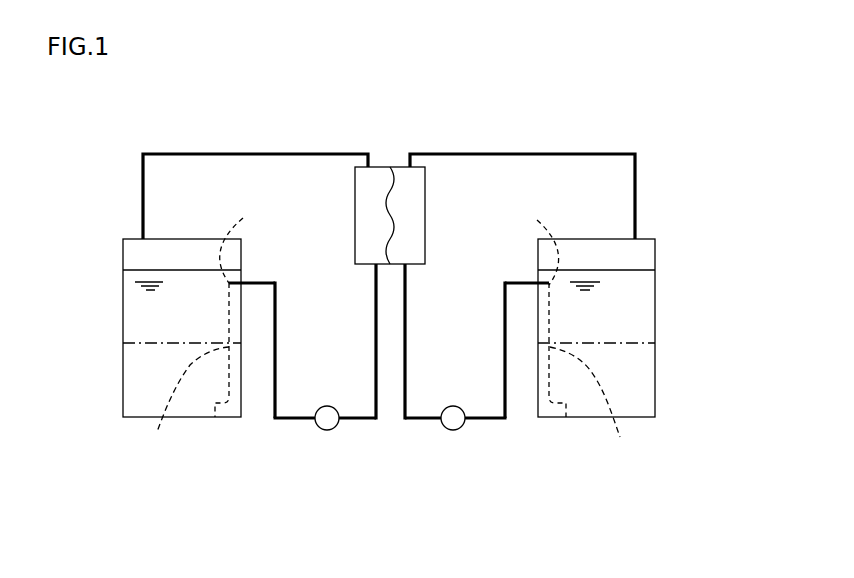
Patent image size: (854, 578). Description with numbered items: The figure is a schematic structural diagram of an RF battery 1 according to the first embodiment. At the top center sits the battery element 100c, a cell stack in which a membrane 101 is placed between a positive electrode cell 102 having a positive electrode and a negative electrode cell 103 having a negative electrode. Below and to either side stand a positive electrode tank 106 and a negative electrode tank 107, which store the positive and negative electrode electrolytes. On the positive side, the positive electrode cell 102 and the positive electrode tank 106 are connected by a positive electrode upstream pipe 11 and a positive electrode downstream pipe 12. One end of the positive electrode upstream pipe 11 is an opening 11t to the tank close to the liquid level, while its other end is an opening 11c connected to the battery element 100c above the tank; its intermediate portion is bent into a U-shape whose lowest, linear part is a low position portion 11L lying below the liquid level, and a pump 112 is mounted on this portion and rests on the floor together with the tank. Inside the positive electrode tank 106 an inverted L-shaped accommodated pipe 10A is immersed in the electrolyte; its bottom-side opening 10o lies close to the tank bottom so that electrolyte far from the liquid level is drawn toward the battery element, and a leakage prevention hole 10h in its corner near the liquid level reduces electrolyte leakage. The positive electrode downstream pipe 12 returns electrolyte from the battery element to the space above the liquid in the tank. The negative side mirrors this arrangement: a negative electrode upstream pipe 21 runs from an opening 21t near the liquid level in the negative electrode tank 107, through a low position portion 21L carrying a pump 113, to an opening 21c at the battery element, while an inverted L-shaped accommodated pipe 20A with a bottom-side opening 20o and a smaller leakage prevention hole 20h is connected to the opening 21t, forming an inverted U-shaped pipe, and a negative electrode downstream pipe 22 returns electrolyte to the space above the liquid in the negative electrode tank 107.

The RF battery 1 is at (651, 221).
The positive electrode downstream pipe 12 is at (235, 152).
The negative electrode downstream pipe 22 is at (520, 153).
The battery element 100c is at (417, 90).
The membrane 101 is at (393, 170).
The positive electrode cell 102 is at (366, 178).
The negative electrode cell 103 is at (414, 178).
The positive electrode tank 106 is at (122, 364).
The negative electrode tank 107 is at (656, 365).
The leakage prevention hole 10h is at (250, 245).
The opening 10o is at (215, 417).
The accommodated pipe 10A is at (183, 404).
The leakage prevention hole 20h is at (530, 245).
The opening 20o is at (566, 417).
The accommodated pipe 20A is at (597, 405).
The positive electrode upstream pipe 11 is at (273, 368).
The opening 11t is at (241, 283).
The low position portion 11L is at (301, 420).
The opening 11c is at (366, 280).
The pump 112 is at (338, 428).
The negative electrode upstream pipe 21 is at (507, 370).
The opening 21t is at (537, 283).
The low position portion 21L is at (492, 422).
The opening 21c is at (412, 280).
The pump 113 is at (444, 428).